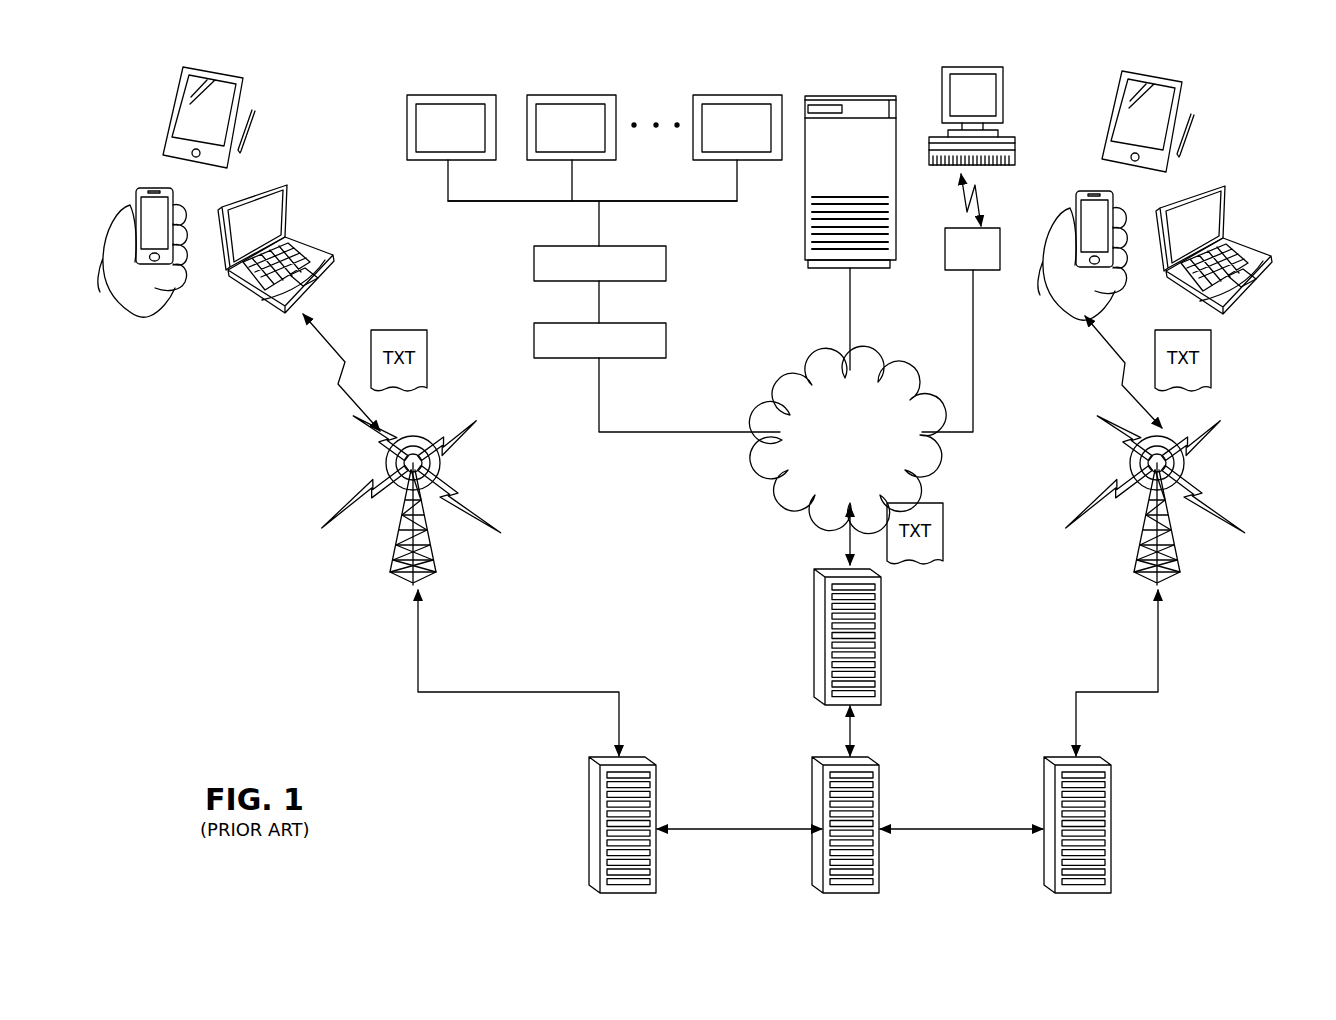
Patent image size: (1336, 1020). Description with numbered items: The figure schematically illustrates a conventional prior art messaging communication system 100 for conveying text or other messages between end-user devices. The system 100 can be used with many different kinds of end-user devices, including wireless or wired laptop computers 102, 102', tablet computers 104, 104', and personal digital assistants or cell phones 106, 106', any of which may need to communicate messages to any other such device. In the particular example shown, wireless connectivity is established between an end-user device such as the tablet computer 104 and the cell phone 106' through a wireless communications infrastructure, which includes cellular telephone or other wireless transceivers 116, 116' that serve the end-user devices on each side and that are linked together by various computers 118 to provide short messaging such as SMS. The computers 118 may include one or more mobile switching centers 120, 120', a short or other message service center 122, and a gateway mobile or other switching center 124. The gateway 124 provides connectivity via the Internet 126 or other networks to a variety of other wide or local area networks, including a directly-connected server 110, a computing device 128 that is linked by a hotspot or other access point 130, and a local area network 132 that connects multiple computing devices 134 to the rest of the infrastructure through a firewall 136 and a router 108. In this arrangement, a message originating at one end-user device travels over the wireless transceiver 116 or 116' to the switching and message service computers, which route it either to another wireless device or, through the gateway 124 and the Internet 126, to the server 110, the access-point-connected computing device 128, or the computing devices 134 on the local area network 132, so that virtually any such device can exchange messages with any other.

The system 100 is at (512, 796).
The laptop computer 102 is at (276, 247).
The laptop computer 102' is at (1216, 248).
The tablet computer 104 is at (231, 117).
The tablet computer 104' is at (1172, 121).
The cell phone 106 is at (142, 239).
The cell phone 106' is at (1082, 241).
The router 108 is at (545, 343).
The directly-connected server 110 is at (805, 216).
The wireless transceiver 116 is at (410, 497).
The wireless transceiver 116' is at (1154, 497).
The computers 118 is at (915, 647).
The mobile switching center 120 is at (647, 807).
The mobile switching center 120' is at (1108, 825).
The message service center 122 is at (876, 793).
The gateway mobile switching center 124 is at (825, 598).
The Internet 126 is at (833, 442).
The computing device 128 is at (1003, 100).
The access point 130 is at (945, 250).
The local area network 132 is at (470, 202).
The computing device 134 is at (398, 135).
The firewall 136 is at (534, 262).